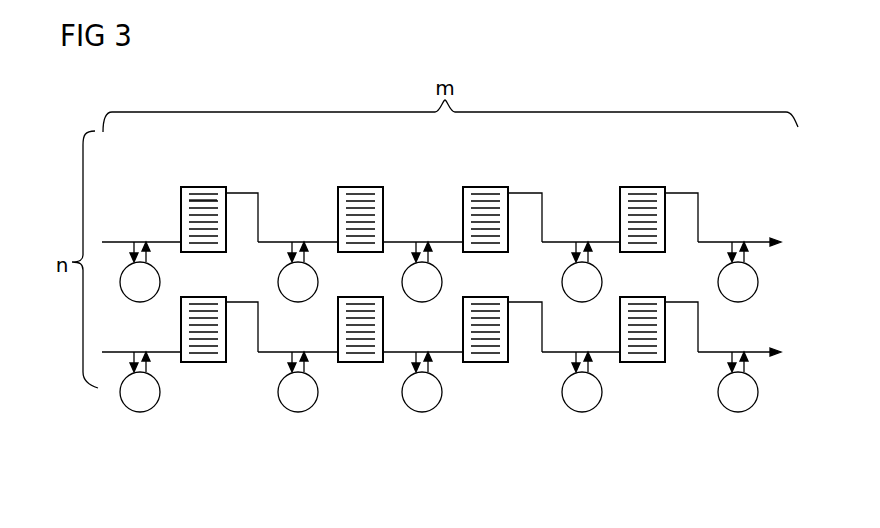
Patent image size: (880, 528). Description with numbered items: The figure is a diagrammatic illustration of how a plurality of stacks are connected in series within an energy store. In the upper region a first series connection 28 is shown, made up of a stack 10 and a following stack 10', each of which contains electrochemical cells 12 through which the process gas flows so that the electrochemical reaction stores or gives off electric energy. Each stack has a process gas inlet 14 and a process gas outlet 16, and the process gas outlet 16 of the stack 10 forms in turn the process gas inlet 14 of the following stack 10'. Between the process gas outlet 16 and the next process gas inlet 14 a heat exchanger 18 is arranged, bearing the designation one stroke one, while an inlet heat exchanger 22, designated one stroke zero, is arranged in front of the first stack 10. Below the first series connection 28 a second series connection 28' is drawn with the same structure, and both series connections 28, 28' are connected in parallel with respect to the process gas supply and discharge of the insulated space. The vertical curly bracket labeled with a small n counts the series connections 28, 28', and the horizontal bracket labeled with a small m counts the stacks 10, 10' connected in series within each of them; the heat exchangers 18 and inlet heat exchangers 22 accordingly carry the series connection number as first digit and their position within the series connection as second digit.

The stack 10 is at (398, 276).
The following stack 10' is at (360, 241).
The electrochemical cell 12 is at (190, 205).
The process gas inlet 14 is at (117, 240).
The process gas outlet 16 is at (247, 192).
The heat exchanger 18 is at (278, 283).
The inlet heat exchanger 22 is at (148, 301).
The series connection 28 is at (763, 213).
The second series connection 28' is at (765, 332).